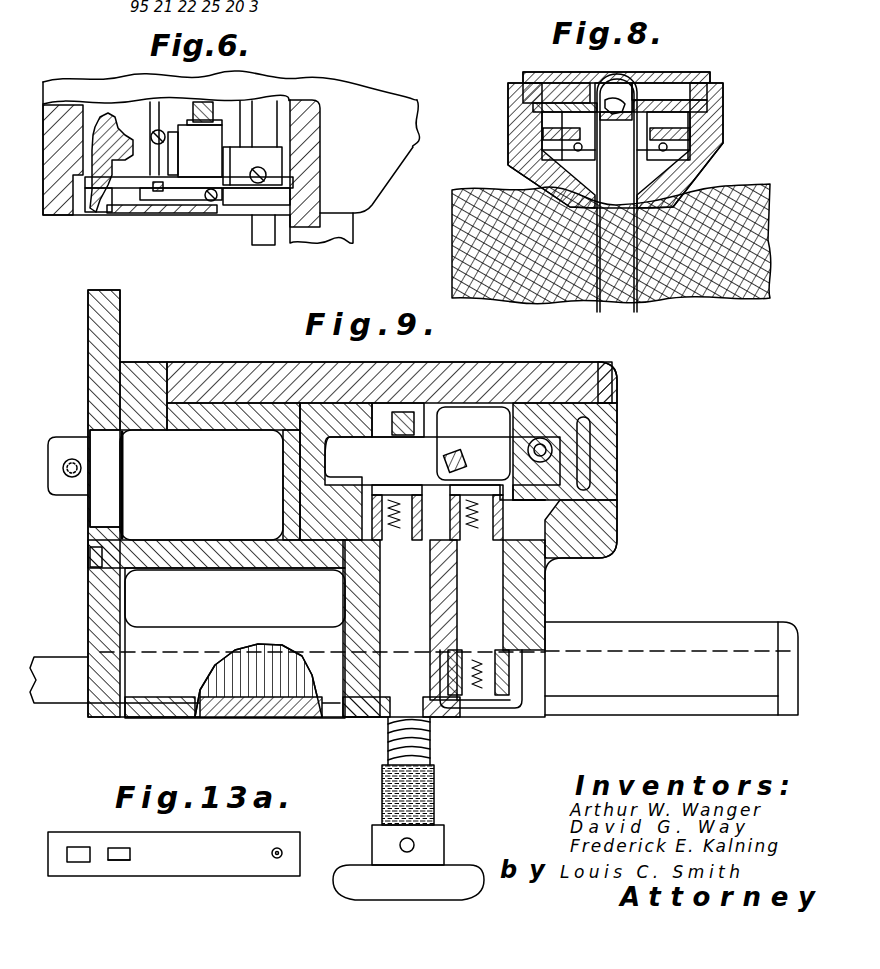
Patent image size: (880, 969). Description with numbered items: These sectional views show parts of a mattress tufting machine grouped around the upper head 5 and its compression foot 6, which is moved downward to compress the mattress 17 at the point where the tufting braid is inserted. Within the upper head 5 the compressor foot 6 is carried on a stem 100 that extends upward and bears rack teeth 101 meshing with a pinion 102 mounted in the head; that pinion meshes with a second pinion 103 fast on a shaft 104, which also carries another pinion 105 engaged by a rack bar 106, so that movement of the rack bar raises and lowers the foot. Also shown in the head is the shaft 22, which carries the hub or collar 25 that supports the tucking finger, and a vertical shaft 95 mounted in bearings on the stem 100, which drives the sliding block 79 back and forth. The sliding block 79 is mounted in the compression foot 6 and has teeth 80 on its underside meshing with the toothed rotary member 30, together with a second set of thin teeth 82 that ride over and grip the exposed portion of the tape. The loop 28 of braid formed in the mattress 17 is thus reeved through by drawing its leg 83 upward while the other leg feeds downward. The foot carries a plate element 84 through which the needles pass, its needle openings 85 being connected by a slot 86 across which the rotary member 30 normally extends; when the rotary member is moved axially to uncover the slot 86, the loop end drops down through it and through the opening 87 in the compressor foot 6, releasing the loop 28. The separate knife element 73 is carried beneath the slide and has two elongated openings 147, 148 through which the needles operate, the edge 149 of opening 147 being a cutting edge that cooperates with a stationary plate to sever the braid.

In FIG. 6, the upper head 5 is at (338, 102).
In FIG. 9, the upper head 5 is at (617, 426).
In FIG. 8, the compression foot 6 is at (515, 160).
In FIG. 8, the mattress 17 is at (745, 196).
In FIG. 6, the shaft 22 is at (204, 112).
In FIG. 9, the shaft 22 is at (458, 455).
In FIG. 6, the hub or collar 25 is at (203, 150).
In FIG. 8, the loop 28 is at (604, 318).
In FIG. 8, the rotary member 30 is at (613, 121).
In FIG. 13A, the knife element 73 is at (55, 872).
In FIG. 8, the sliding block 79 is at (548, 82).
In FIG. 8, the teeth 80 is at (608, 86).
In FIG. 8, the second set of teeth 82 is at (566, 86).
In FIG. 8, the leg of the loop 83 is at (596, 290).
In FIG. 8, the plate element 84 is at (685, 104).
In FIG. 8, the needle openings 85 is at (648, 90).
In FIG. 8, the slot 86 is at (640, 118).
In FIG. 8, the opening 87 is at (645, 292).
In FIG. 6, the vertical shaft 95 is at (262, 230).
In FIG. 9, the vertical shaft 95 is at (403, 436).
In FIG. 9, the stem 100 is at (300, 440).
In FIG. 9, the rack teeth 101 is at (385, 525).
In FIG. 9, the pinion 102 is at (378, 516).
In FIG. 9, the second pinion 103 is at (560, 508).
In FIG. 9, the shaft 104 is at (540, 616).
In FIG. 9, the pinion 105 is at (523, 700).
In FIG. 9, the rack bar 106 is at (258, 692).
In FIG. 13A, the elongated opening 147 is at (124, 862).
In FIG. 13A, the elongated opening 148 is at (82, 850).
In FIG. 13A, the cutting edge 149 is at (115, 862).